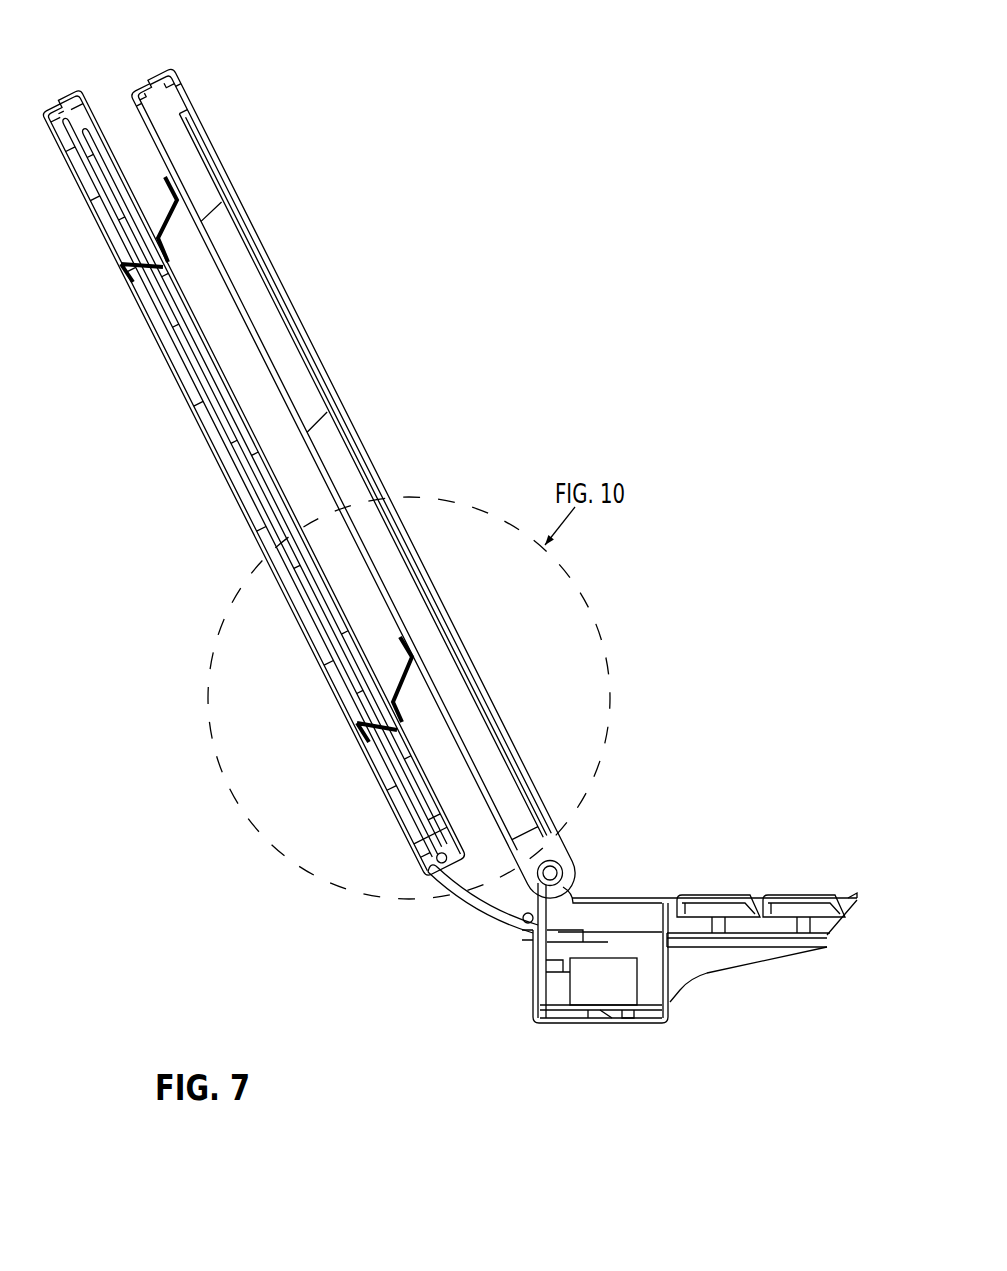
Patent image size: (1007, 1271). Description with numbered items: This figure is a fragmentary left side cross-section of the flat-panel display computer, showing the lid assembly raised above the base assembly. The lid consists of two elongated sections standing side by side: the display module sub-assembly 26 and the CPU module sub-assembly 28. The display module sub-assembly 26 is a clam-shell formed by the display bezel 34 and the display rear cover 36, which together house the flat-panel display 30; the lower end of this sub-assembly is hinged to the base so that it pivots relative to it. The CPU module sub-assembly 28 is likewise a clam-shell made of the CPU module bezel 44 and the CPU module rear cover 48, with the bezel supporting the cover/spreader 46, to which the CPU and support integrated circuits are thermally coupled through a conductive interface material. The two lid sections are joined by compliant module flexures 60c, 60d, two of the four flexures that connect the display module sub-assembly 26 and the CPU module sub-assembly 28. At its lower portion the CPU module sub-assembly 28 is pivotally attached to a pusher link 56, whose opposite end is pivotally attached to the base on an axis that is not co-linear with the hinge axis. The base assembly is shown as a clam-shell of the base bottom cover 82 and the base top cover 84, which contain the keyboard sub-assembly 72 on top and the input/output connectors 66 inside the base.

The display module sub-assembly 26 is at (228, 174).
The CPU module sub-assembly 28 is at (243, 528).
The flat-panel display 30 is at (273, 332).
The display bezel 34 is at (560, 856).
The display rear cover 36 is at (127, 100).
The CPU module bezel 44 is at (83, 98).
The cover/spreader 46 is at (280, 488).
The CPU module rear cover 48 is at (177, 388).
The pusher link 56 is at (490, 913).
The compliant module flexure 60c is at (167, 228).
The compliant module flexure 60d is at (397, 702).
The input/output connectors 66 is at (563, 977).
The keyboard sub-assembly 72 is at (808, 890).
The base bottom cover 82 is at (655, 1025).
The base top cover 84 is at (637, 897).